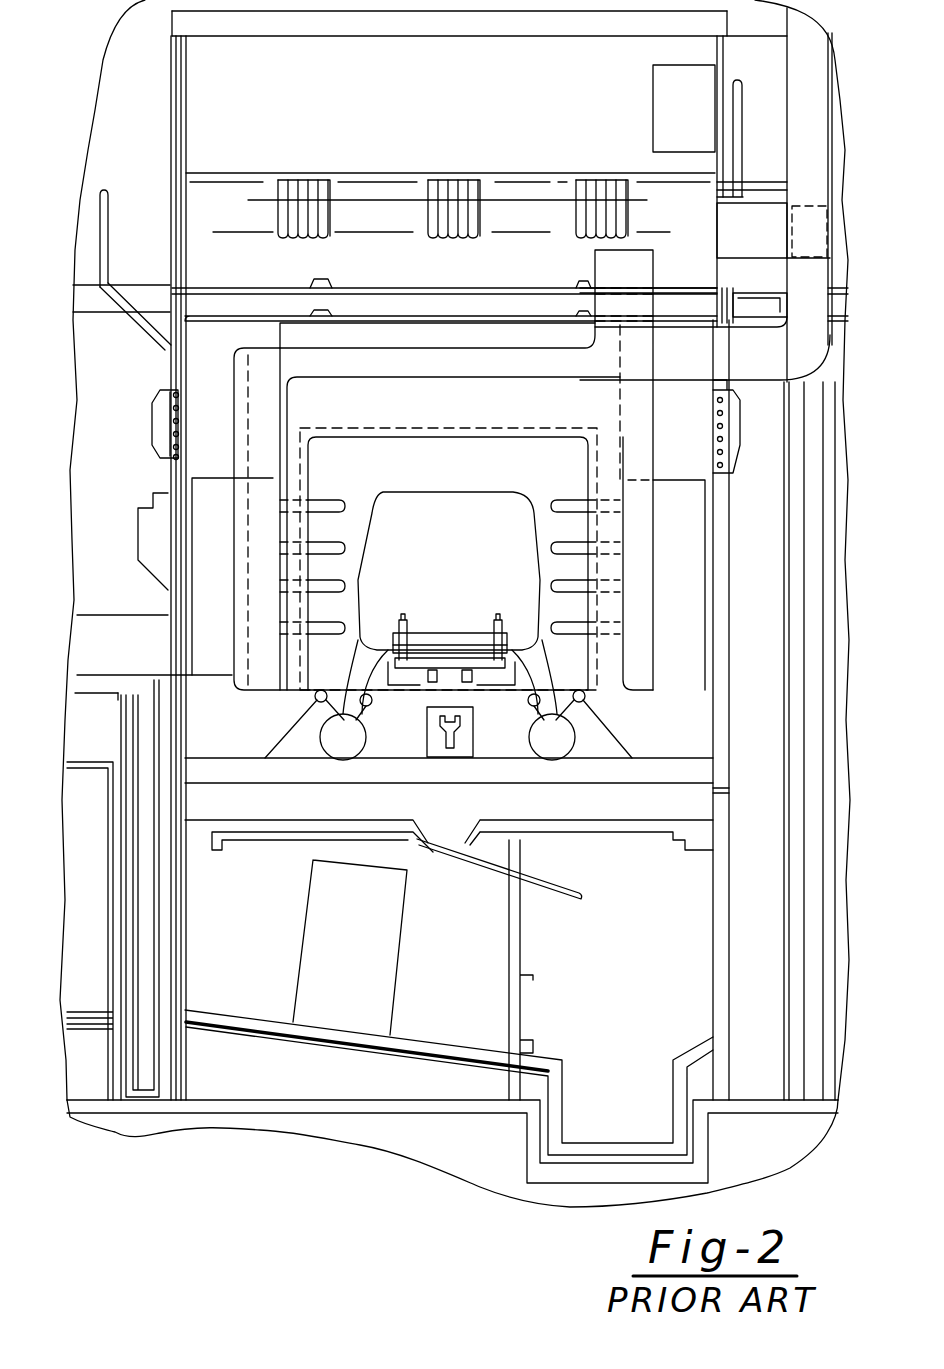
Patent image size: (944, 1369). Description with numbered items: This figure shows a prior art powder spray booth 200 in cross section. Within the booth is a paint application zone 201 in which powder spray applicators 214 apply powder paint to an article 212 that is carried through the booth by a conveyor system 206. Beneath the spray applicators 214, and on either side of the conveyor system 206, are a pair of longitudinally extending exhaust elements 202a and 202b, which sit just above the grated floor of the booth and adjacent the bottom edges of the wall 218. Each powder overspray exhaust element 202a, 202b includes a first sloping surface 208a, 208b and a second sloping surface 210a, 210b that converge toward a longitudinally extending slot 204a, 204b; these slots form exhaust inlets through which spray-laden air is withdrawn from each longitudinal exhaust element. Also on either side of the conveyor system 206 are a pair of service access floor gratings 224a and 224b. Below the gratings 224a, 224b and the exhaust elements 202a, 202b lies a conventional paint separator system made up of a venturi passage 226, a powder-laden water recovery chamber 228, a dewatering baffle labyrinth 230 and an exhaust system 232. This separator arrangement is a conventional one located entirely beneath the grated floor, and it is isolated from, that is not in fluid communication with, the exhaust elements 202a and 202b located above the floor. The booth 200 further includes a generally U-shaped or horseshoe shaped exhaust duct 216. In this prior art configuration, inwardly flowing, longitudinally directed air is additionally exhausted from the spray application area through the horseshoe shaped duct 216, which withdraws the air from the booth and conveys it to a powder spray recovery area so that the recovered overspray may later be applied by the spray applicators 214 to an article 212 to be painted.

The powder spray booth 200 is at (92, 101).
The paint application zone 201 is at (470, 476).
The longitudinally extending exhaust element 202a is at (315, 727).
The longitudinally extending exhaust element 202b is at (583, 703).
The longitudinally extending slot 204a is at (386, 628).
The longitudinally extending slot 204b is at (513, 626).
The conveyor system 206 is at (452, 690).
The first sloping surface 208a is at (318, 698).
The first sloping surface 208b is at (540, 712).
The second sloping surface 210a is at (353, 760).
The second sloping surface 210b is at (583, 738).
The article 212 is at (487, 492).
The spray applicators 214 is at (378, 455).
The exhaust duct 216 is at (373, 348).
The wall 218 is at (622, 750).
The service access floor grating 224a is at (390, 667).
The service access floor grating 224b is at (470, 690).
The venturi passage 226 is at (520, 852).
The powder-laden water recovery chamber 228 is at (655, 1096).
The dewatering baffle labyrinth 230 is at (352, 972).
The exhaust system 232 is at (86, 894).